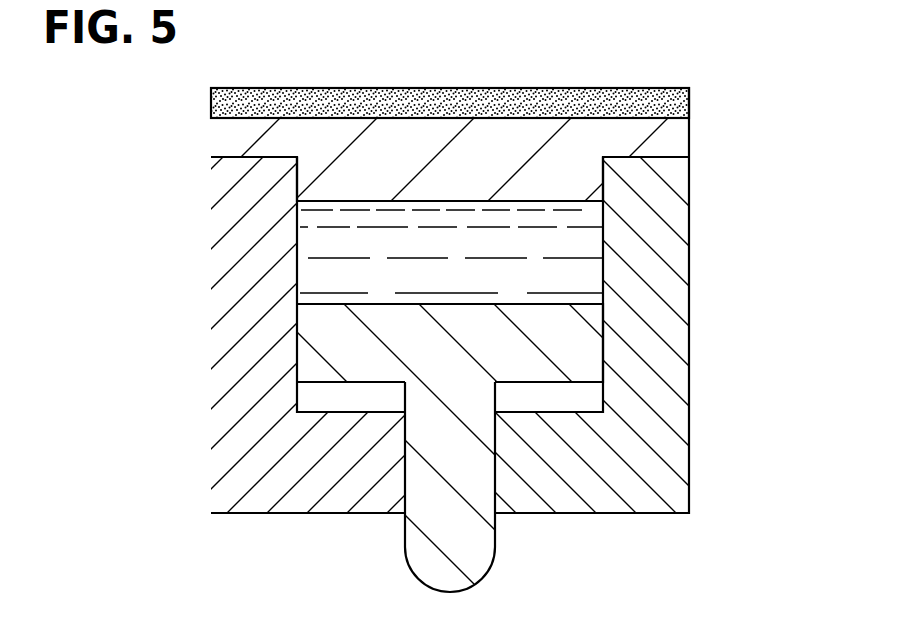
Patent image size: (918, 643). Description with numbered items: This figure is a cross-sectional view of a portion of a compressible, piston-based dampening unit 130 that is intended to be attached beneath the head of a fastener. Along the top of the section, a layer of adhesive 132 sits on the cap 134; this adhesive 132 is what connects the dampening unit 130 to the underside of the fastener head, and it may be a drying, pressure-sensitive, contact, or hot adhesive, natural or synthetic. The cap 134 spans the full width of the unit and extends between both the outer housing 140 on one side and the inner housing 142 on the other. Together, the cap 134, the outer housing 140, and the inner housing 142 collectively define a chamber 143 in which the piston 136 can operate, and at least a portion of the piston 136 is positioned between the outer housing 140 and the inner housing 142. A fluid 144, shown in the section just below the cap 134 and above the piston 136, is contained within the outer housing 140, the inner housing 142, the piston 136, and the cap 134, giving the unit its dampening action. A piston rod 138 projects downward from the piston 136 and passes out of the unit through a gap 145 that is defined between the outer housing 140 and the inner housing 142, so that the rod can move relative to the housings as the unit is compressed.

The dampening unit 130 is at (543, 67).
The adhesive 132 is at (297, 88).
The cap 134 is at (388, 143).
The piston 136 is at (570, 337).
The piston rod 138 is at (430, 560).
The outer housing 140 is at (233, 330).
The inner housing 142 is at (663, 243).
The chamber 143 is at (582, 393).
The fluid 144 is at (570, 235).
The gap 145 is at (500, 517).